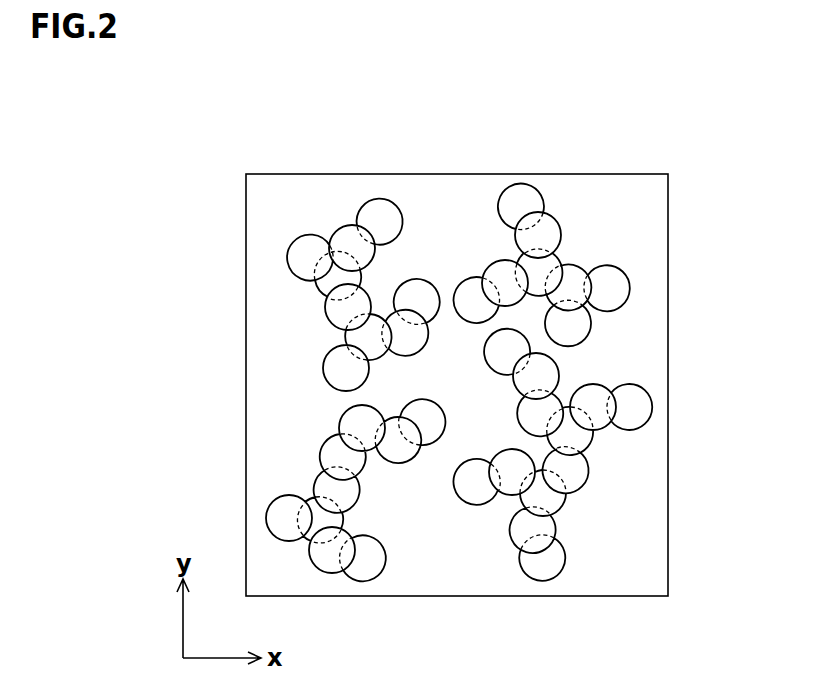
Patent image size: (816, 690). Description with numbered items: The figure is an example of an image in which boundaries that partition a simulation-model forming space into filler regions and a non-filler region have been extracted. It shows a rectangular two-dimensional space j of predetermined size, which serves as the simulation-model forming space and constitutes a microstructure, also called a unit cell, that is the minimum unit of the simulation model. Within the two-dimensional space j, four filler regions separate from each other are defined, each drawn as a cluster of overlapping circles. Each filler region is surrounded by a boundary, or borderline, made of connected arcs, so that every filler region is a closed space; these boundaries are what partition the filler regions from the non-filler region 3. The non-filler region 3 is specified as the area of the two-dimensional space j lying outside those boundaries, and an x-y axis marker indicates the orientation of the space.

The non-filler region 3 is at (268, 366).
The two-dimensional space j is at (631, 164).